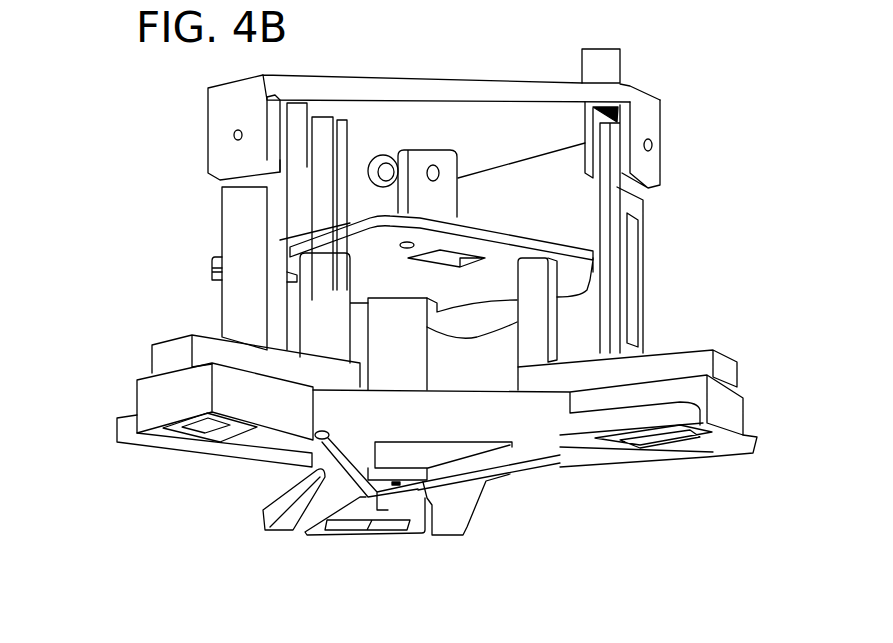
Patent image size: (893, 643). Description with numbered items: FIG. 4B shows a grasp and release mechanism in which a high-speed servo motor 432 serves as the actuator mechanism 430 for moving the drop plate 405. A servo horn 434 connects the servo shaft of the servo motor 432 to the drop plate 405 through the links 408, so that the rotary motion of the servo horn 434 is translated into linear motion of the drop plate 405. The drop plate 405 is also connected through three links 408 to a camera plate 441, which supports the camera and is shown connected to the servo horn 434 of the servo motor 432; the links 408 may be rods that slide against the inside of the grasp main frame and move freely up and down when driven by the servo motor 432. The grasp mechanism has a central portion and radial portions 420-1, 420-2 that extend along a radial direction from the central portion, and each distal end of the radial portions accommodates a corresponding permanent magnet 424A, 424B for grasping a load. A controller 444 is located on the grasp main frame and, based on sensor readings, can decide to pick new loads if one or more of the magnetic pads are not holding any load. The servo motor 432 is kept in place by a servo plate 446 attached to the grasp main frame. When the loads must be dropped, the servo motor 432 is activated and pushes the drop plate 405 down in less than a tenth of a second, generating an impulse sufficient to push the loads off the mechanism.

The drop plate 405 is at (558, 462).
The links 408 is at (440, 321).
The radial portion 420-1 is at (157, 383).
The radial portion 420-2 is at (700, 363).
The permanent magnet 424A is at (210, 432).
The permanent magnet 424B is at (686, 437).
The actuator mechanism 430 is at (200, 206).
The servo motor 432 is at (350, 145).
The servo horn 434 is at (372, 186).
The camera plate 441 is at (495, 235).
The controller 444 is at (605, 67).
The servo plate 446 is at (450, 83).